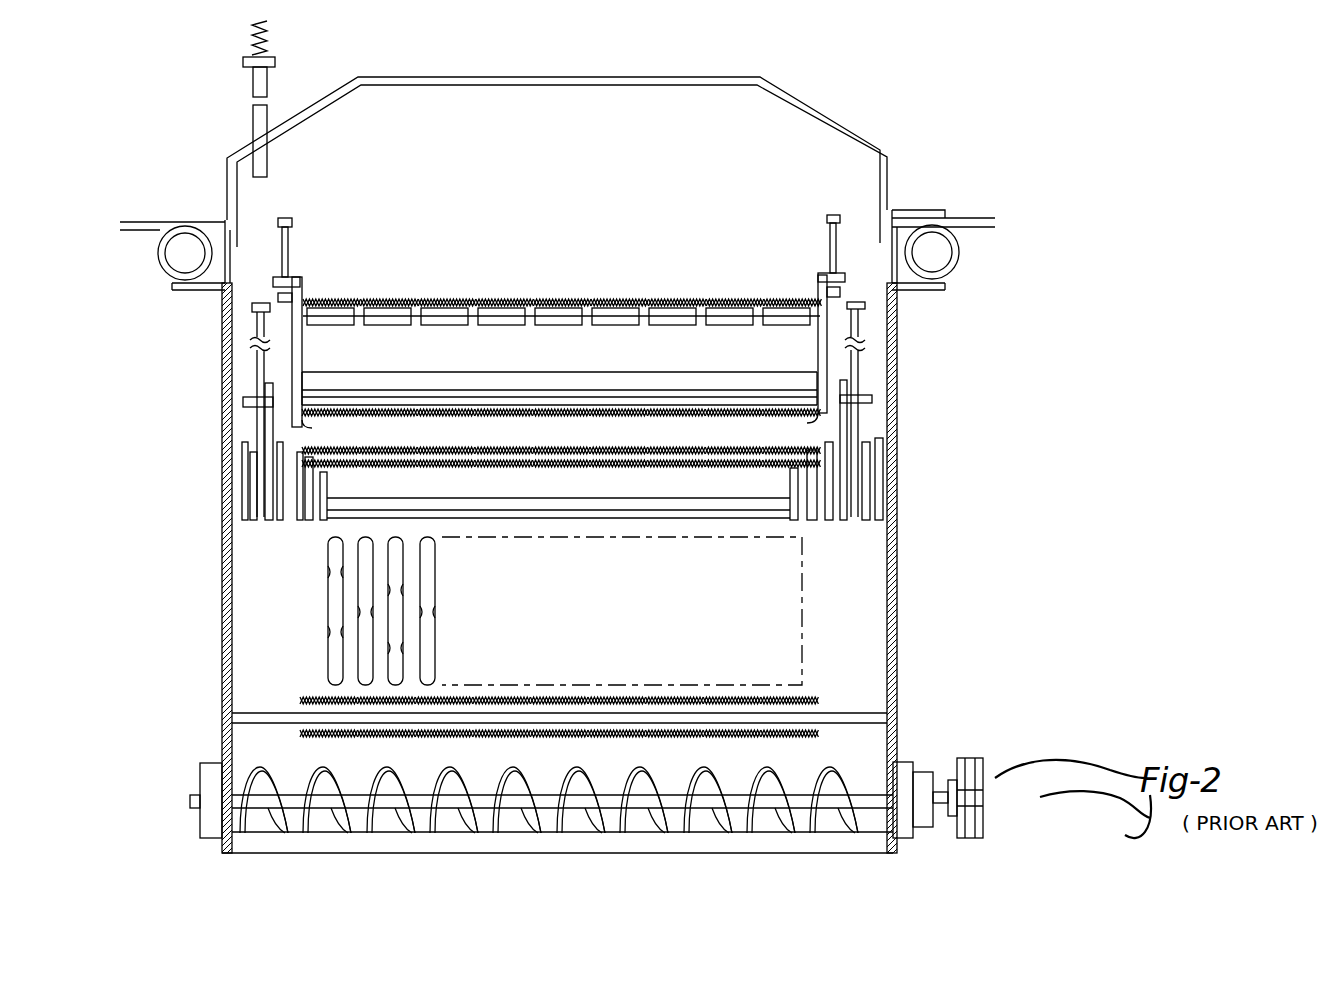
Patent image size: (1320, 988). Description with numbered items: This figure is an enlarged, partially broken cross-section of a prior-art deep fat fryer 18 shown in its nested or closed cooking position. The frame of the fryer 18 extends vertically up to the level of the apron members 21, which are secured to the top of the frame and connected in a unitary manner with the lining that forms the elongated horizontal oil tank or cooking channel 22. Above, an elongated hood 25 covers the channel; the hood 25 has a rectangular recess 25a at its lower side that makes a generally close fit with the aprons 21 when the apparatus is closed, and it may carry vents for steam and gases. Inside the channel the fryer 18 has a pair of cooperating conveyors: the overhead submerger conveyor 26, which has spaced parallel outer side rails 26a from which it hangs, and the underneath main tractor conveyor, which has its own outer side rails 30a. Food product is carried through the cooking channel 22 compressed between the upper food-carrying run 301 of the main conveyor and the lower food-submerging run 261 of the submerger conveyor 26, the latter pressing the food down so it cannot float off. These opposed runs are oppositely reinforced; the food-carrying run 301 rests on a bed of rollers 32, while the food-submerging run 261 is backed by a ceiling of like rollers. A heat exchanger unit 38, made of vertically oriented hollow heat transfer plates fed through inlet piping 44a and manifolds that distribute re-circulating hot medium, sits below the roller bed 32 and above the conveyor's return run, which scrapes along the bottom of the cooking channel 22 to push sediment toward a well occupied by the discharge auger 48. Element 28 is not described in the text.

The deep fat fryer 18 is at (858, 110).
The apron members 21 is at (948, 218).
The cooking channel 22 is at (777, 433).
The hood 25 is at (705, 75).
The rectangular recess 25a is at (235, 262).
The submerger conveyor 26 is at (588, 298).
The food-submerging run 261 is at (516, 420).
The outer side rails 26a is at (823, 352).
The cylinder core 28 is at (462, 375).
The food-carrying run 301 is at (672, 447).
The outer side rails 30a is at (270, 388).
The bed of rollers 32 is at (792, 513).
The heat exchanger unit 38 is at (802, 637).
The inlet piping 44a is at (268, 88).
The discharge auger 48 is at (830, 780).